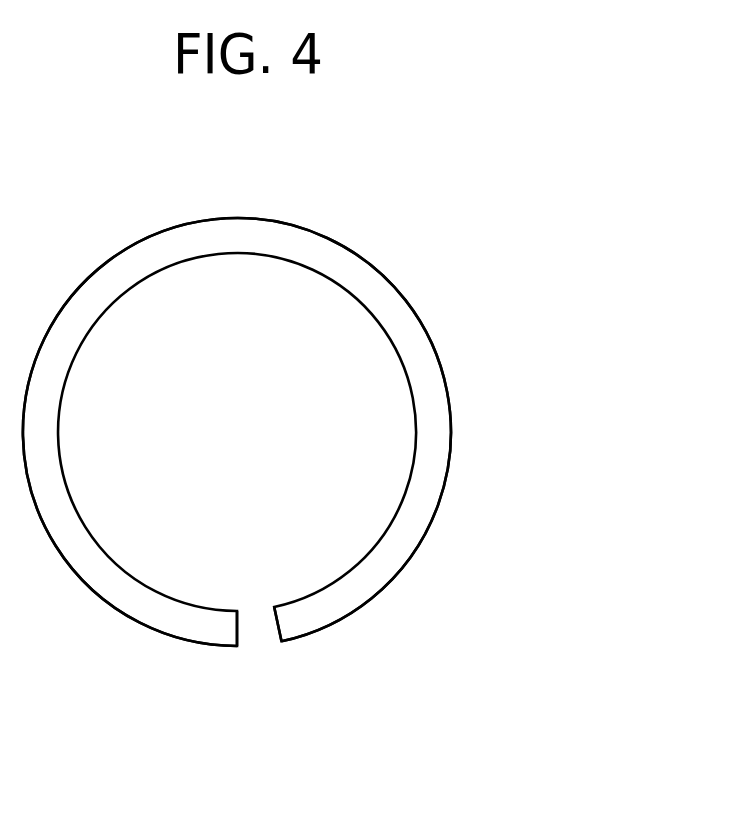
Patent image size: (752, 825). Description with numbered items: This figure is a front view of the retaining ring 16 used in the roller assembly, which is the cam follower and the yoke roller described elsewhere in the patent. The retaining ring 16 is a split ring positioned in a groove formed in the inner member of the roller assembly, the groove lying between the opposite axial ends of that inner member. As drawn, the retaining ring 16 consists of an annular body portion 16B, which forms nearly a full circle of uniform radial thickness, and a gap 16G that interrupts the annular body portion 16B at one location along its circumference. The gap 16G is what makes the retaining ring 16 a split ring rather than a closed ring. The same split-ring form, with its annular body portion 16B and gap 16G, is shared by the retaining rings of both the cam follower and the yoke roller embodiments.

The retaining ring 16 is at (433, 228).
The annular body portion 16B is at (430, 438).
The gap 16G is at (255, 627).